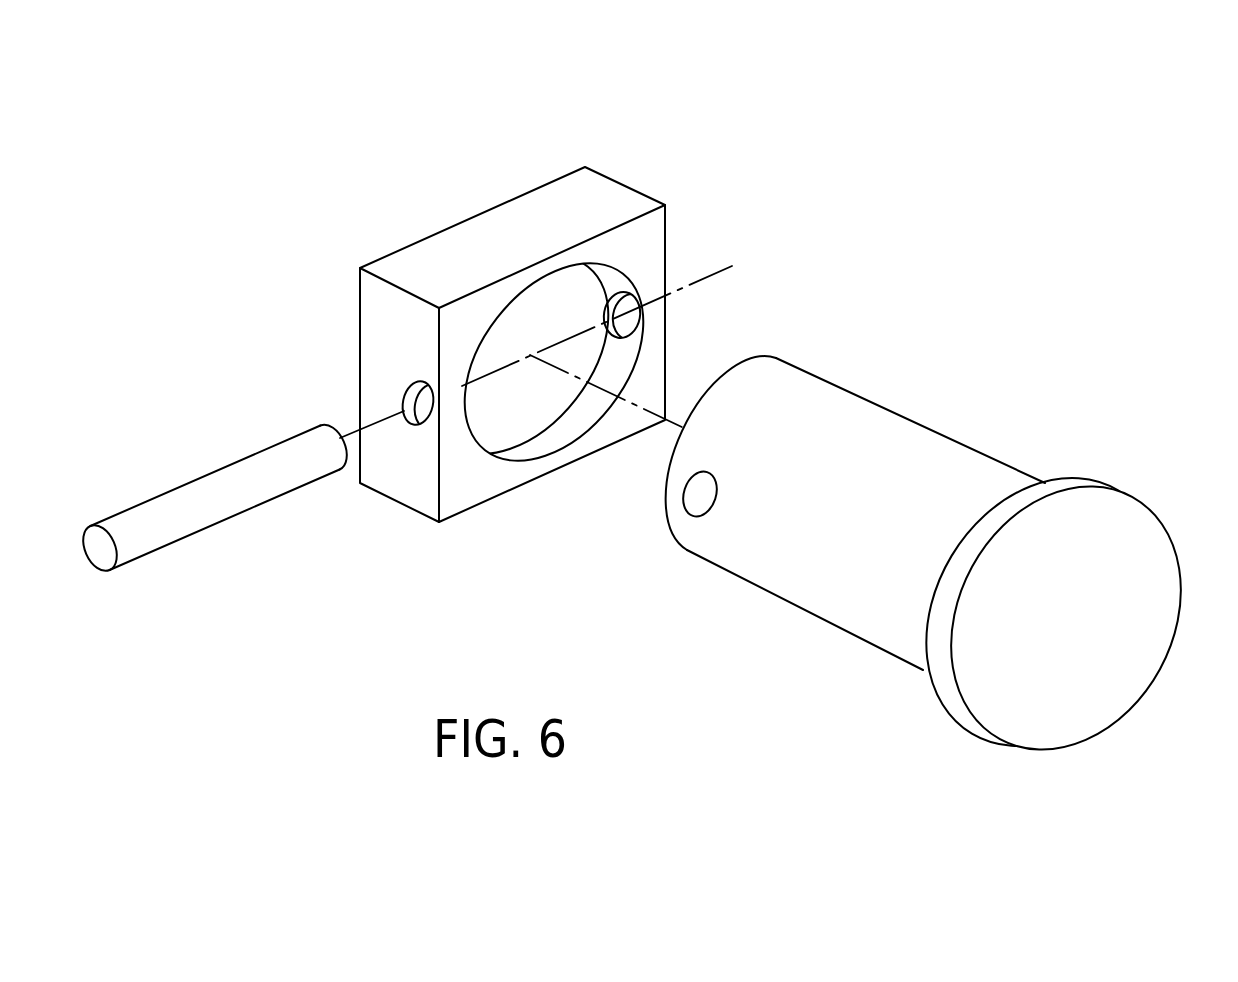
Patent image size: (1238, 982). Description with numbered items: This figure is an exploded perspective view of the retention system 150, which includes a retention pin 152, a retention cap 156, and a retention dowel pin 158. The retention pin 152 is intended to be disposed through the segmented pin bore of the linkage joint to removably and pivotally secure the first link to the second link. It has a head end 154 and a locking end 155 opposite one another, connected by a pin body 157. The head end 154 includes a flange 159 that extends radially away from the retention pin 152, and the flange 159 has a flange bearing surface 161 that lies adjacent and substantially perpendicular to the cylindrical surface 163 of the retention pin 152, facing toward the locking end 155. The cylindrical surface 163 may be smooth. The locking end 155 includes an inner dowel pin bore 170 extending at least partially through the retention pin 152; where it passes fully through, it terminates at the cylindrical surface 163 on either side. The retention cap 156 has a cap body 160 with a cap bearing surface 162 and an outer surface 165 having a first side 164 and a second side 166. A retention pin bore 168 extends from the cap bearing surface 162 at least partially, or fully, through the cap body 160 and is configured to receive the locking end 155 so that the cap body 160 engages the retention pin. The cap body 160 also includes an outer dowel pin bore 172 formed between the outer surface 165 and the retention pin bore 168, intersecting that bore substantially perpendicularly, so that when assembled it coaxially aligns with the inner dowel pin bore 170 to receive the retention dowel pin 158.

The retention system 150 is at (772, 195).
The retention pin 152 is at (998, 355).
The head end 154 is at (1147, 581).
The locking end 155 is at (695, 530).
The retention cap 156 is at (457, 185).
The pin body 157 is at (825, 590).
The retention dowel pin 158 is at (165, 520).
The flange 159 is at (1077, 490).
The cap body 160 is at (555, 223).
The flange bearing surface 161 is at (918, 706).
The cap bearing surface 162 is at (468, 482).
The cylindrical surface 163 is at (850, 440).
The first side 164 is at (383, 312).
The outer surface 165 is at (377, 358).
The second side 166 is at (680, 247).
The retention pin bore 168 is at (617, 363).
The inner dowel pin bore 170 is at (683, 498).
The outer dowel pin bore 172 is at (408, 422).